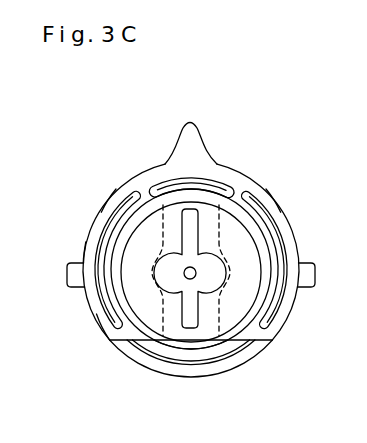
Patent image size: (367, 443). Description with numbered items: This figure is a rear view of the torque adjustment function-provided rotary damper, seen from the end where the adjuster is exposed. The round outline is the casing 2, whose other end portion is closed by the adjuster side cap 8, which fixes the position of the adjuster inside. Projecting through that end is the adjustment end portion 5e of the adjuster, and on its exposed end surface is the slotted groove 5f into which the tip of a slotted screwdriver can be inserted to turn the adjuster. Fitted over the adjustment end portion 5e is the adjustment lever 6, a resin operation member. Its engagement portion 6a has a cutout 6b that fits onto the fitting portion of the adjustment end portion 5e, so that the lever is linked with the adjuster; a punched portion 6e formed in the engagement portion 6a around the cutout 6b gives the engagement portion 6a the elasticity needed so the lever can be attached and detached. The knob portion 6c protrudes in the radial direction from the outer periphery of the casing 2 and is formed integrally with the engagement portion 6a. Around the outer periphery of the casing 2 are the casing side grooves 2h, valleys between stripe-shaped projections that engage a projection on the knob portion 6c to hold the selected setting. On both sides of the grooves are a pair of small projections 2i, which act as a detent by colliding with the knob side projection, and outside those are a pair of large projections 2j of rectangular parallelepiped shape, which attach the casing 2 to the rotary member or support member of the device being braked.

The casing 2 is at (210, 372).
The casing side grooves 2h is at (120, 190).
The small projections 2i is at (88, 240).
The large projections 2j is at (72, 287).
The adjustment end portion 5e is at (204, 212).
The slotted groove 5f is at (183, 330).
The adjustment lever 6 is at (190, 122).
The engagement portion 6a is at (86, 252).
The cutout 6b is at (219, 336).
The knob portion 6c is at (178, 126).
The punched portion 6e is at (103, 333).
The adjuster side cap 8 is at (140, 360).